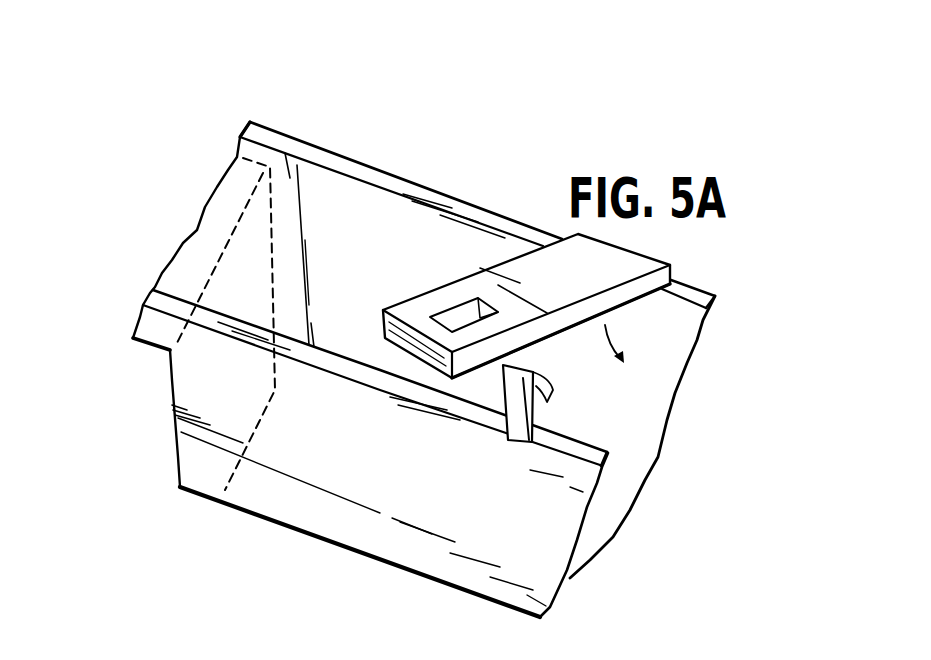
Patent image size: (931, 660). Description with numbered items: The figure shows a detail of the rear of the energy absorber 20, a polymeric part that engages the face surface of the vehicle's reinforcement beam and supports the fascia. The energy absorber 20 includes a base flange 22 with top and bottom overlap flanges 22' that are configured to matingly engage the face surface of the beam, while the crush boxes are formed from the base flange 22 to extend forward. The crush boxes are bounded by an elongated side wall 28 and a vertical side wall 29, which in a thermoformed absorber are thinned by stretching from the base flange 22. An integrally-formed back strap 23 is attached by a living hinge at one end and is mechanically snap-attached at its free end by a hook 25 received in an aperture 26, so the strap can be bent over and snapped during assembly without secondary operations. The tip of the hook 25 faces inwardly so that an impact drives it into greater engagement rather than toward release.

The energy absorber 20 is at (206, 113).
The base flange 22 is at (231, 321).
The overlap flange 22' is at (429, 307).
The back strap 23 is at (480, 287).
The hook 25 is at (544, 371).
The aperture 26 is at (455, 317).
The elongated side wall 28 is at (422, 555).
The vertical side wall 29 is at (173, 411).